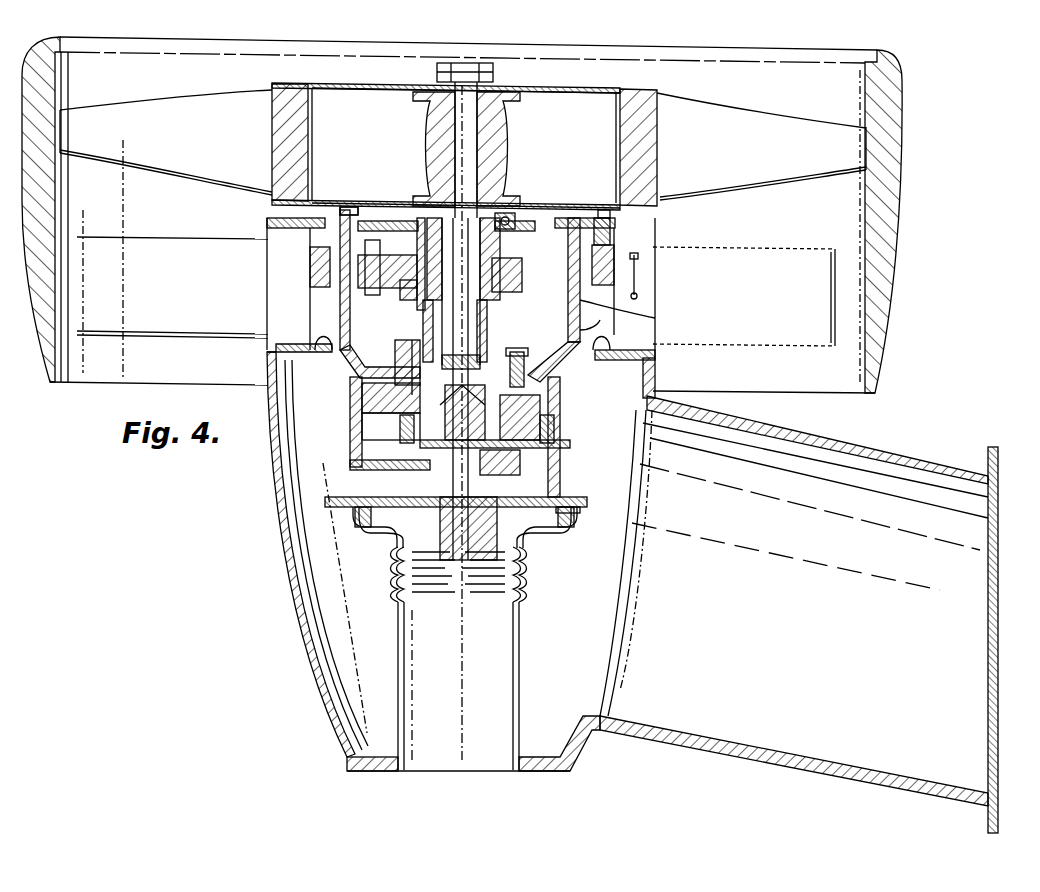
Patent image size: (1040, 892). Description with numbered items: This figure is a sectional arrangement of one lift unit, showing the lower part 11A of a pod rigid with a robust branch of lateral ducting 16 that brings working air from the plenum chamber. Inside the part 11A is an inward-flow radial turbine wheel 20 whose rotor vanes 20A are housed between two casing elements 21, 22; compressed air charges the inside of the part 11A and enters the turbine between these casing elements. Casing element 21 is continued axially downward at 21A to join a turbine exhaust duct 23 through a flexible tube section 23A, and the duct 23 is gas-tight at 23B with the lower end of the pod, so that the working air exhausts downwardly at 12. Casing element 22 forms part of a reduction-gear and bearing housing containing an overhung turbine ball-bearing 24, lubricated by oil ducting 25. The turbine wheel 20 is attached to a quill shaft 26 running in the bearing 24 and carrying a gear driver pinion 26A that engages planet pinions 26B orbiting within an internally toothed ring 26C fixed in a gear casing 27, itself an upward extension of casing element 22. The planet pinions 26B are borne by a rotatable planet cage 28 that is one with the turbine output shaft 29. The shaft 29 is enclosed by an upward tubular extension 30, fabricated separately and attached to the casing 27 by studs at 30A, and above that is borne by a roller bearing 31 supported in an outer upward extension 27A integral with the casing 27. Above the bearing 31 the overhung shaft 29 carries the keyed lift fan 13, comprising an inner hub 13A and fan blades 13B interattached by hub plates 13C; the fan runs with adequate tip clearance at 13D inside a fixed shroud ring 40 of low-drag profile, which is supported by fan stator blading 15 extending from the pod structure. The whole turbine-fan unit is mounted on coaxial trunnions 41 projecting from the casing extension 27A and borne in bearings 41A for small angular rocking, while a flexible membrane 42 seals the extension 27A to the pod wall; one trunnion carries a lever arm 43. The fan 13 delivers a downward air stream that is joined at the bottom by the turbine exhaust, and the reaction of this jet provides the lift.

The lower part of pod 11A is at (275, 521).
The working air exhaust 12 is at (457, 762).
The lift fan 13 is at (605, 155).
The inner hub 13A is at (445, 138).
The fan blades 13B is at (765, 130).
The hub plates 13C is at (572, 88).
The tip clearance 13D is at (865, 128).
The stator blading 15 is at (789, 258).
The lateral ducting 16 is at (912, 480).
The inward-flow radial turbine wheel 20 is at (510, 538).
The rotor vanes 20A is at (524, 565).
The turbine casing element 21 is at (392, 512).
The downward continuation of casing element 21A is at (395, 552).
The turbine casing element 22 is at (576, 512).
The turbine exhaust duct 23 is at (519, 672).
The flexible tube section 23A is at (524, 594).
The gas-tight seal 23B is at (515, 762).
The turbine ball-bearing 24 is at (560, 490).
The oil ducting 25 is at (350, 471).
The quill shaft 26 is at (520, 458).
The gear driver pinion 26A is at (532, 428).
The planet pinions 26B is at (362, 449).
The internally toothed ring 26C is at (400, 418).
The gear casing 27 is at (560, 424).
The outer upward extension of casing 27A is at (606, 316).
The planet cage 28 is at (520, 405).
The turbine output shaft 29 is at (470, 319).
The upward tubular extension 30 is at (490, 306).
The studs 30A is at (524, 356).
The roller bearing 31 is at (505, 222).
The shroud ring 40 is at (900, 168).
The trunnions 41 is at (330, 256).
The bearings 41A is at (338, 242).
The flexible membrane 42 is at (610, 348).
The lever arm 43 is at (640, 278).